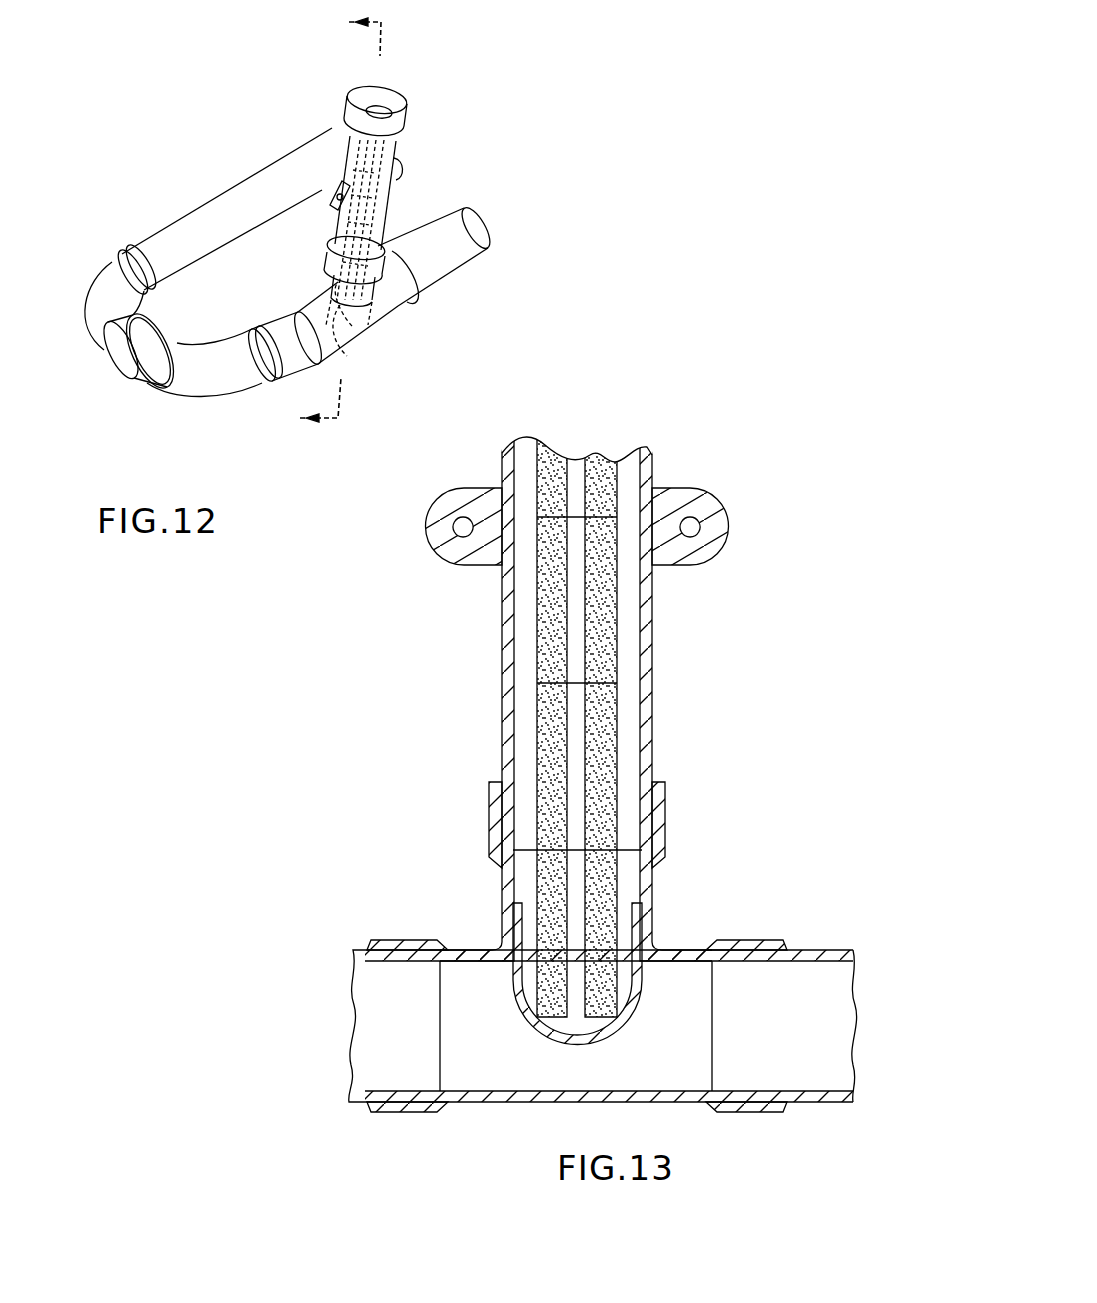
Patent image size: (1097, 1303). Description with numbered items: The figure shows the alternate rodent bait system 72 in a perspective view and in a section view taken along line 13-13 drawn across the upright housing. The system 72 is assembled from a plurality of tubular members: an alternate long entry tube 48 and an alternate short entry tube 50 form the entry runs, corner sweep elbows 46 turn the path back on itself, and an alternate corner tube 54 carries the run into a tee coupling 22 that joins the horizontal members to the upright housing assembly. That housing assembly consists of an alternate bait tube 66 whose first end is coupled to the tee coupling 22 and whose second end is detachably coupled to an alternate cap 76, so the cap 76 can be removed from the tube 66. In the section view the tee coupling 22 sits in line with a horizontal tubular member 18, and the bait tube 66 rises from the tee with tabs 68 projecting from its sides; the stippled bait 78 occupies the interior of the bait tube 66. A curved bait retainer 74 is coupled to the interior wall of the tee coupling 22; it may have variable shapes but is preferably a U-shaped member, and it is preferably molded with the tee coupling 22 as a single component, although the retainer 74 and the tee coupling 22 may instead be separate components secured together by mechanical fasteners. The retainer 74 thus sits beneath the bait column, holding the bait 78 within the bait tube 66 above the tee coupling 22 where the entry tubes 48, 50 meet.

In FIG. 12, the section line 13 is at (329, 220).
In FIG. 13, the pipe 18 is at (403, 955).
In FIG. 12, the tee coupling 22 is at (355, 304).
In FIG. 13, the tee coupling 22 is at (495, 821).
In FIG. 12, the corner sweep elbows 46 is at (83, 293).
In FIG. 12, the alternate long entry tube 48 is at (258, 182).
In FIG. 12, the alternate short entry tube 50 is at (460, 252).
In FIG. 12, the alternate corner tube 54 is at (271, 312).
In FIG. 12, the alternate bait tube 66 is at (343, 174).
In FIG. 13, the alternate bait tube 66 is at (647, 717).
In FIG. 12, the mounting tab 68 is at (390, 162).
In FIG. 13, the mounting tab 68 is at (718, 517).
In FIG. 12, the alternate rodent bait system 72 is at (178, 184).
In FIG. 12, the curved bait retainer 74 is at (350, 356).
In FIG. 13, the curved bait retainer 74 is at (637, 999).
In FIG. 12, the alternate cap 76 is at (390, 100).
In FIG. 12, the filter media 78 is at (370, 220).
In FIG. 13, the filter media 78 is at (605, 463).